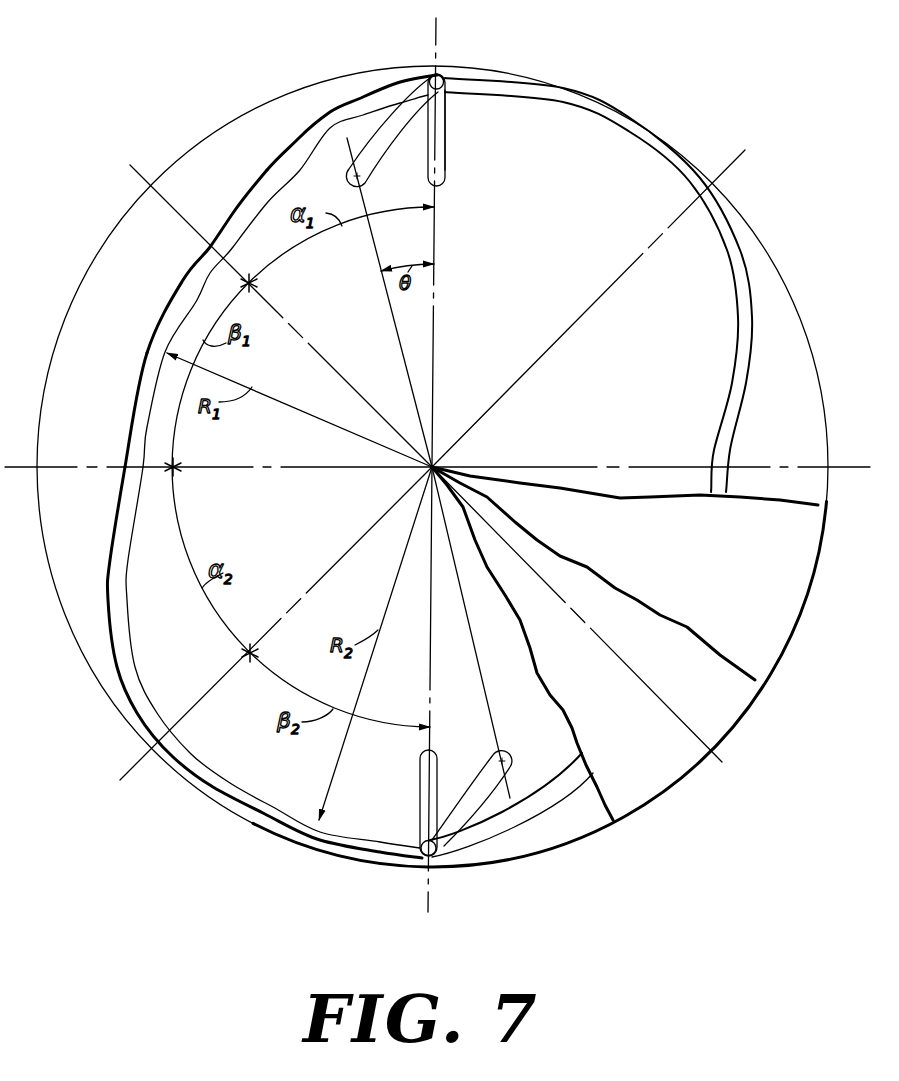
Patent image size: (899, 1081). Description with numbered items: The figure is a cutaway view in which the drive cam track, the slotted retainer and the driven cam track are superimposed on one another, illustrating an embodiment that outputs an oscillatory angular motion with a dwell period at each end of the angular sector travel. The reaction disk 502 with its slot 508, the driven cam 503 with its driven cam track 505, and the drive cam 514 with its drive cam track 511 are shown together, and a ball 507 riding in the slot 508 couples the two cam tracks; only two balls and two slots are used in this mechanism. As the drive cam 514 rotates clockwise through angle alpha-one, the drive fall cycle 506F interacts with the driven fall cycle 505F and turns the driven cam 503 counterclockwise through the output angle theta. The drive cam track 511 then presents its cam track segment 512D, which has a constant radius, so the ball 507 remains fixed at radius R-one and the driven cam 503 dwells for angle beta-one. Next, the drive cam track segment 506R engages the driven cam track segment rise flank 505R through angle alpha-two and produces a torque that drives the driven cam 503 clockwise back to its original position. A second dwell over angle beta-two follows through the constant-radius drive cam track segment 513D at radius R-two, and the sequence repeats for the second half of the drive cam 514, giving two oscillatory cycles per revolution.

The reaction disk 502 is at (730, 731).
The driven cam 503 is at (803, 605).
The driven cam track 505 is at (399, 159).
The driven fall cycle 505F is at (371, 143).
The driven cam track segment rise flank 505R is at (364, 133).
The drive fall cycle 506F is at (257, 167).
The drive cam track segment 506R is at (115, 518).
The ball 507 is at (445, 77).
The slot 508 is at (452, 126).
The drive cam track 511 is at (139, 348).
The cam track segment 512D is at (187, 271).
The drive cam track segment 513D is at (250, 823).
The drive cam 514 is at (542, 854).